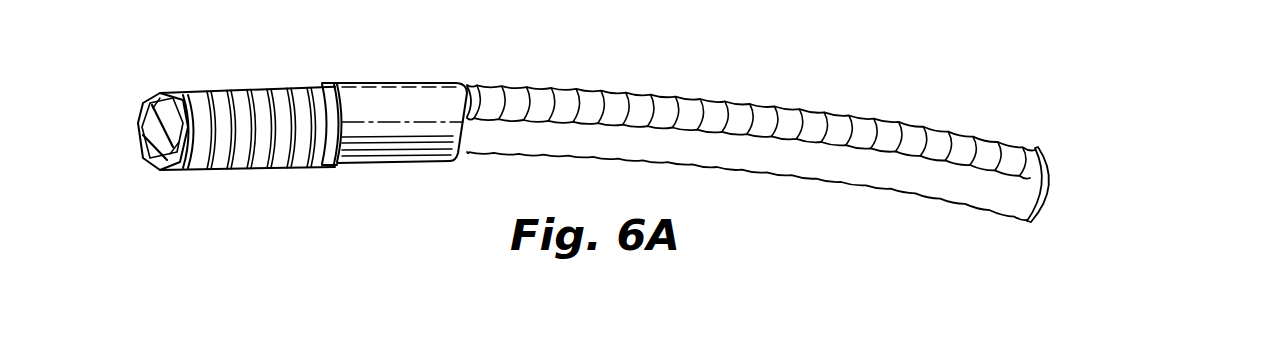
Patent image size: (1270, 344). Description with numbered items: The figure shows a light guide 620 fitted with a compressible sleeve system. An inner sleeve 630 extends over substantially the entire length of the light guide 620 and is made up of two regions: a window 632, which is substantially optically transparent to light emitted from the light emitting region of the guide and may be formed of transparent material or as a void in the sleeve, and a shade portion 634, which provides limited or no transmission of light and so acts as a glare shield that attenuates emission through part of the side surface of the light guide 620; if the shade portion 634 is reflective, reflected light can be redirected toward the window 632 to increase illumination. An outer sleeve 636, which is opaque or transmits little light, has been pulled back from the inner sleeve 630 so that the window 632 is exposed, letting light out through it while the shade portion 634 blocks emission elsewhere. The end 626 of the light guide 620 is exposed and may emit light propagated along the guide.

The light guide 620 is at (1105, 113).
The end of the light guide 626 is at (1058, 178).
The inner sleeve 630 is at (980, 141).
The window 632 is at (790, 162).
The shade portion 634 is at (803, 117).
The outer sleeve 636 is at (253, 92).